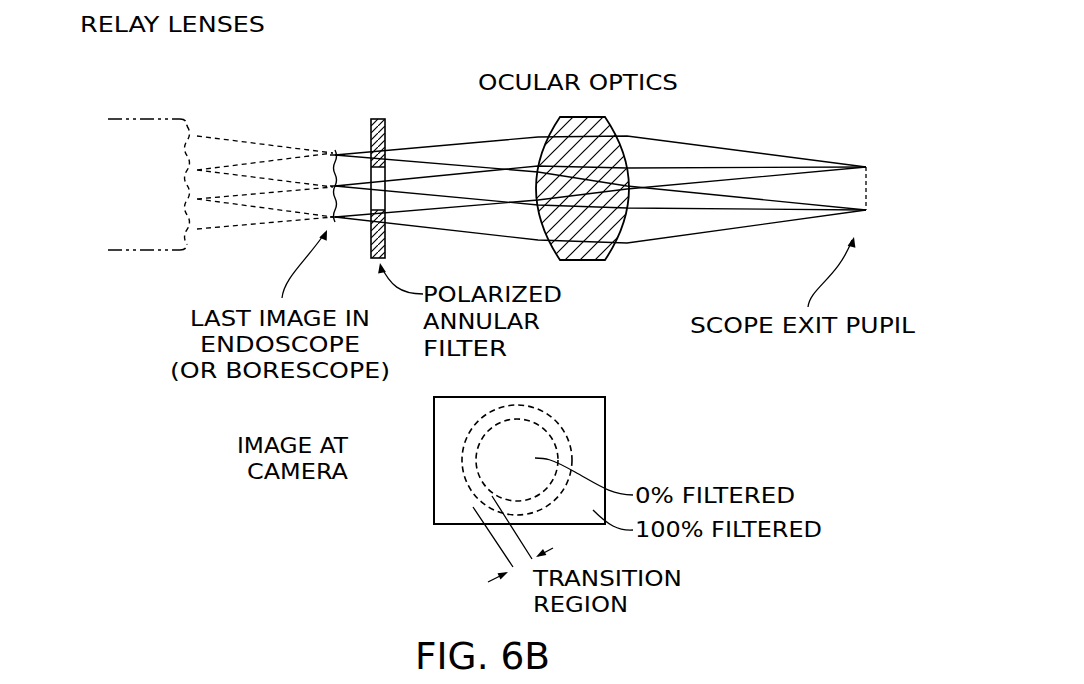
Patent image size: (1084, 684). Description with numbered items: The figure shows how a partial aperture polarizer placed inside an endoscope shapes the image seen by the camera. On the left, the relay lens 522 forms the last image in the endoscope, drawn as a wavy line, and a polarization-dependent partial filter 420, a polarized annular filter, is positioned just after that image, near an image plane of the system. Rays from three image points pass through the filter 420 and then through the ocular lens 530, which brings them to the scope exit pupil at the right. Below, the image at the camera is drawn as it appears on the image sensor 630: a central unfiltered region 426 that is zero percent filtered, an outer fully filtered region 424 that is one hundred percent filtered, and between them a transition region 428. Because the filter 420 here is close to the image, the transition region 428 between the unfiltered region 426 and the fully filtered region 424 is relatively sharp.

The relay lens 522 is at (148, 103).
The polarization-dependent partial filter 420 is at (373, 118).
The ocular lens 530 is at (628, 50).
The image sensor 630 is at (562, 451).
The fully filtered region 424 is at (600, 422).
The unfiltered region 426 is at (512, 456).
The transition region 428 is at (470, 485).